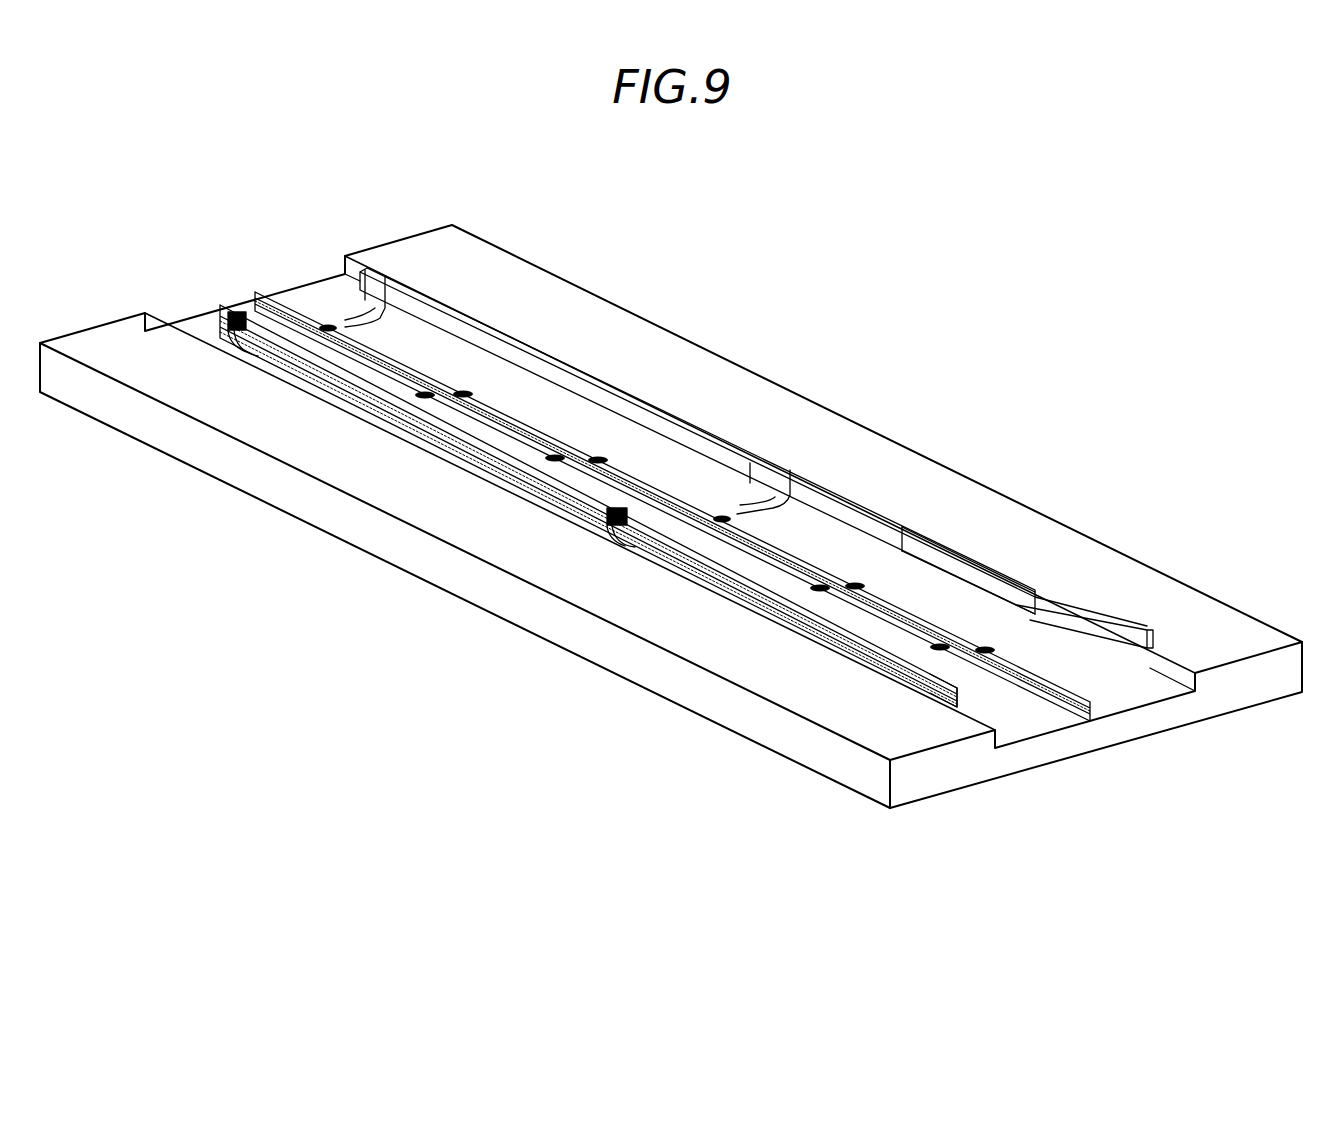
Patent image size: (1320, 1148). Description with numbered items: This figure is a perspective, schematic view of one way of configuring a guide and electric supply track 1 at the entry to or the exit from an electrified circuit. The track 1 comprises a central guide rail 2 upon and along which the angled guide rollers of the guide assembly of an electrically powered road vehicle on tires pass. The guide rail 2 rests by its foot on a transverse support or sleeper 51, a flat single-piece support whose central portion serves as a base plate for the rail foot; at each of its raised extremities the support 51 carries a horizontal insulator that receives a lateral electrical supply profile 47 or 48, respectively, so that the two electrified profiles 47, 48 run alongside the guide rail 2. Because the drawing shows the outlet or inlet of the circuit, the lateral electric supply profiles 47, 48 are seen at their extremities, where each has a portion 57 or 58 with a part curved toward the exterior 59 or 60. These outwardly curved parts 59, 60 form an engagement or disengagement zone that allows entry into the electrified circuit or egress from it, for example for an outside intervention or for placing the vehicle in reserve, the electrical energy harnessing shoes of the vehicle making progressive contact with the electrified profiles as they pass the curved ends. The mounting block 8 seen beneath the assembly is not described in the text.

The guide and electric supply track 1 is at (268, 234).
The central guide rail 2 is at (1015, 683).
The main body block 8 is at (940, 773).
The lateral electrical supply profile 47 is at (427, 433).
The lateral electrical supply profile 48 is at (607, 380).
The transverse support or sleeper 51 is at (347, 318).
The extremity portion of lateral electrical supply profile 57 is at (790, 617).
The extremity portion of lateral electrical supply profile 58 is at (968, 565).
The portion curved toward the exterior 59 is at (893, 653).
The portion curved toward the exterior 60 is at (1080, 607).